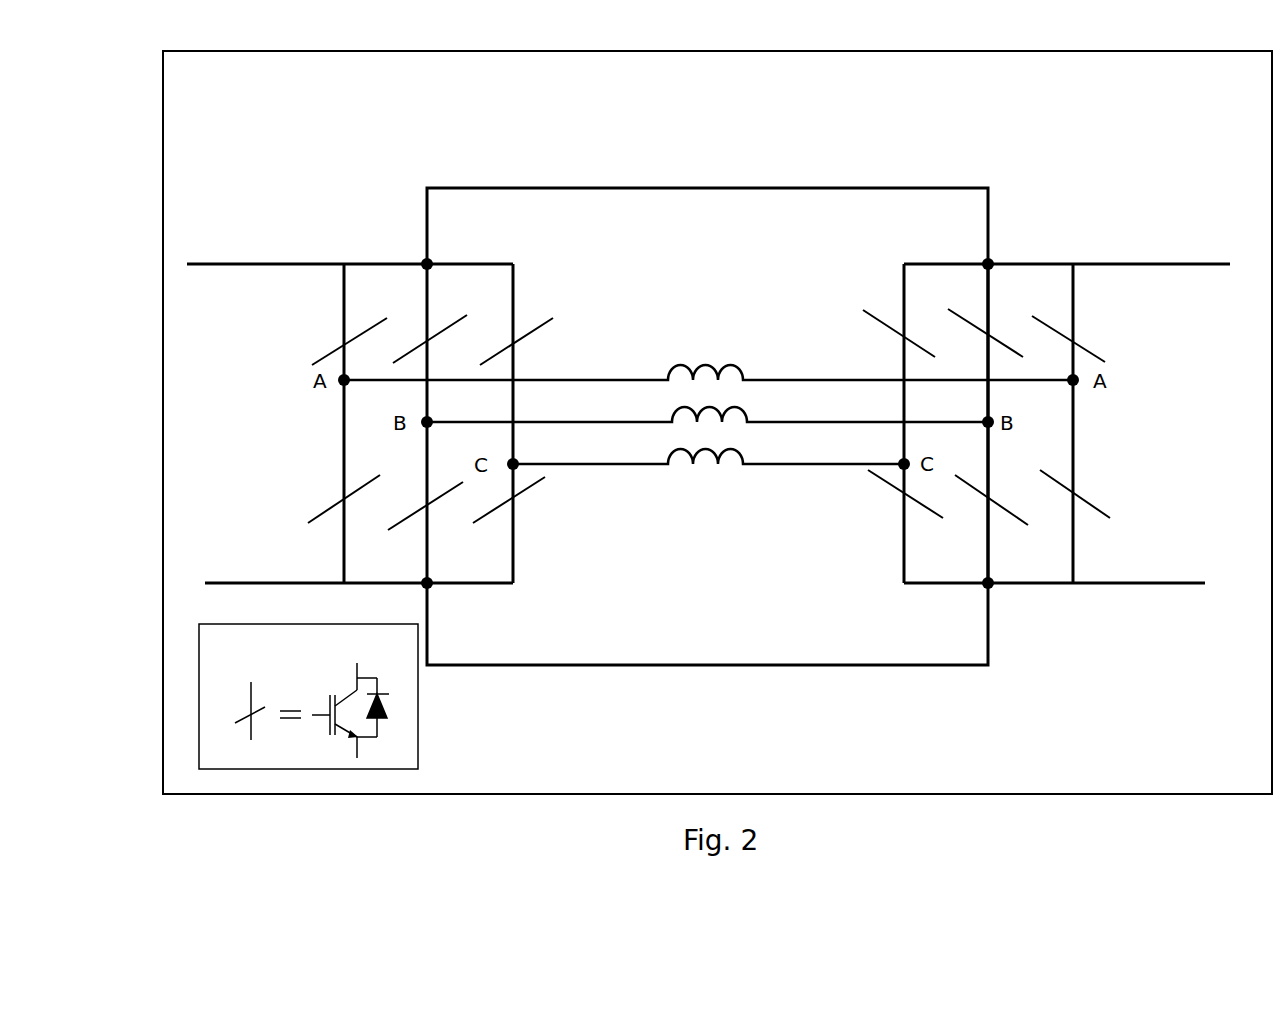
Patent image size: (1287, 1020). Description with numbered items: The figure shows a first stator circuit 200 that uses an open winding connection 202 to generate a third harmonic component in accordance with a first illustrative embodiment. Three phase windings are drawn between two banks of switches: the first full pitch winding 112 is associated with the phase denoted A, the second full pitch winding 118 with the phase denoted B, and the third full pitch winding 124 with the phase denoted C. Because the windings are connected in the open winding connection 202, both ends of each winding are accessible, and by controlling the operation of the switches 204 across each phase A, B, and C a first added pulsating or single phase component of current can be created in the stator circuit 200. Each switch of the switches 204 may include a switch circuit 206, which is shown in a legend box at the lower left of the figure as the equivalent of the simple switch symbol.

The first stator circuit 200 is at (1232, 772).
The open winding connection 202 is at (657, 188).
The switches 204 is at (330, 355).
The switch circuit 206 is at (267, 663).
The first full pitch winding 112 is at (768, 380).
The second full pitch winding 118 is at (643, 422).
The third full pitch winding 124 is at (612, 464).